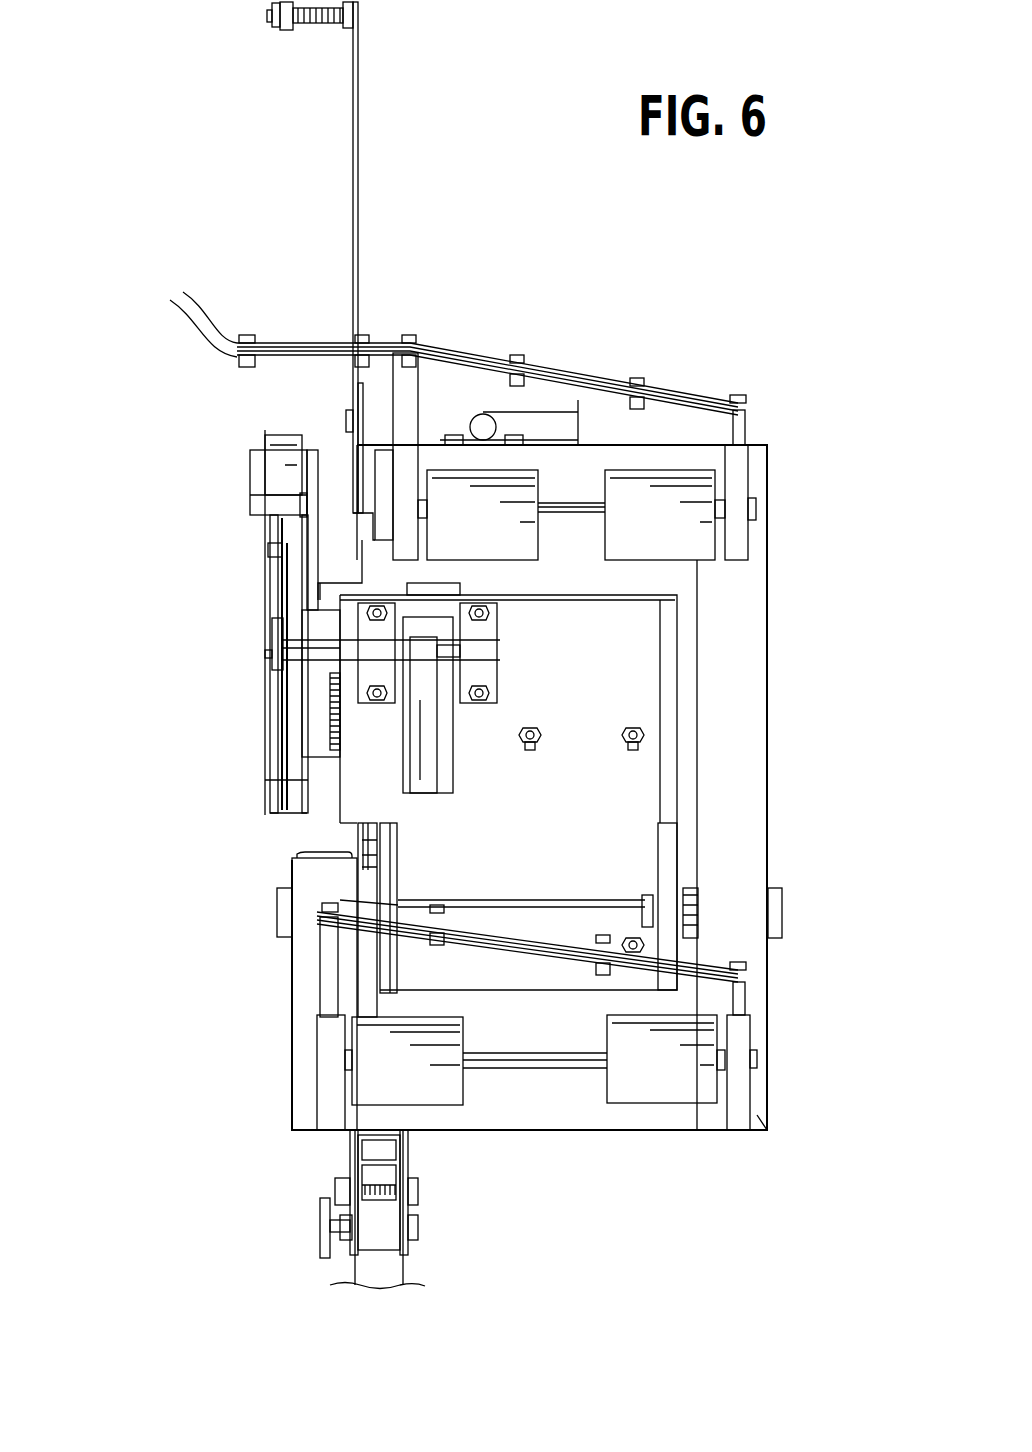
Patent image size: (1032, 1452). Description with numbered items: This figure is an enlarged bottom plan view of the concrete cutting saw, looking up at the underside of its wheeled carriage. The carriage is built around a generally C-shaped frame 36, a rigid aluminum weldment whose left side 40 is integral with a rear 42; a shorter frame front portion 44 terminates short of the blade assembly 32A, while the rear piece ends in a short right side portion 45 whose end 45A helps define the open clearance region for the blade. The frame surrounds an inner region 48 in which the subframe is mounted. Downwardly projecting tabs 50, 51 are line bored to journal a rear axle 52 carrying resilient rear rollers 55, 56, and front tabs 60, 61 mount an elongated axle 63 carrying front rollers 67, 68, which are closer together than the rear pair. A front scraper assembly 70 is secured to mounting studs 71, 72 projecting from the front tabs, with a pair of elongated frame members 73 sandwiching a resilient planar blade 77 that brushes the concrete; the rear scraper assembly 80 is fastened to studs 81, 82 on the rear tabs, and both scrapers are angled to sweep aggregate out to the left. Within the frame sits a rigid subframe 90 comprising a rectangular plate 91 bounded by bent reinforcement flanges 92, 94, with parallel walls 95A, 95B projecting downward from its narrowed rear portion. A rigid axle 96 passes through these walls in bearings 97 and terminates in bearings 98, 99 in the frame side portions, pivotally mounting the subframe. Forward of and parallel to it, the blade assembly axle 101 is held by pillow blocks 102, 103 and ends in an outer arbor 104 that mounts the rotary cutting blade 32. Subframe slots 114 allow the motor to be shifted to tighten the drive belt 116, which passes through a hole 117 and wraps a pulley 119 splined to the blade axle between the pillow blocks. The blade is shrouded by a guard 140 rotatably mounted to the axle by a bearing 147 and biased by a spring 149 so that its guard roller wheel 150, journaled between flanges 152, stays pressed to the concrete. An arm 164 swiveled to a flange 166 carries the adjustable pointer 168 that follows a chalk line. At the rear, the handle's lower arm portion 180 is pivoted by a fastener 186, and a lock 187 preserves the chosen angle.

The rotary cutting blade 32 is at (272, 612).
The blade assembly 32A is at (230, 545).
The frame 36 is at (598, 1158).
The left side 40 is at (745, 632).
The rear 42 is at (625, 1118).
The frame front portion 44 is at (548, 460).
The right side portion 45 is at (300, 1020).
The frame portion end 45A is at (317, 843).
The inner region 48 is at (300, 833).
The tab 50 is at (330, 1085).
The tab 51 is at (755, 1030).
The rear axle 52 is at (560, 1075).
The rear roller 55 is at (432, 1095).
The rear roller 56 is at (680, 1085).
The tab 60 is at (412, 535).
The tab 61 is at (752, 487).
The elongated axle 63 is at (756, 512).
The front roller 67 is at (450, 487).
The front roller 68 is at (663, 503).
The front scraper assembly 70 is at (522, 305).
The mounting stud 71 is at (750, 445).
The mounting stud 72 is at (420, 345).
The elongated frame members 73 is at (448, 342).
The blade 77 is at (745, 412).
The rear scraper assembly 80 is at (790, 965).
The stud 81 is at (330, 980).
The stud 82 is at (745, 985).
The subframe 90 is at (690, 698).
The plate 91 is at (575, 802).
The reinforcement flange 92 is at (540, 588).
The reinforcement flange 94 is at (670, 683).
The wall 95A is at (398, 962).
The wall 95B is at (677, 835).
The axle 96 is at (505, 900).
The bearing 97 is at (700, 895).
The bearing 98 is at (782, 905).
The bearing 99 is at (285, 905).
The blade assembly axle 101 is at (282, 640).
The pillow block 102 is at (520, 675).
The pillow block 103 is at (368, 672).
The outer arbor 104 is at (245, 683).
The subframe slot 114 is at (620, 735).
The drive belt 116 is at (445, 725).
The hole 117 is at (440, 795).
The pulley 119 is at (492, 650).
The guard 140 is at (250, 793).
The bearing 147 is at (292, 650).
The spring 149 is at (300, 715).
The guard roller wheel 150 is at (290, 435).
The flange 152 is at (255, 470).
The arm 164 is at (358, 168).
The flange 166 is at (360, 460).
The pointer 168 is at (268, 28).
The lower arm portion 180 is at (385, 1235).
The fastener 186 is at (335, 1188).
The lock 187 is at (322, 1240).